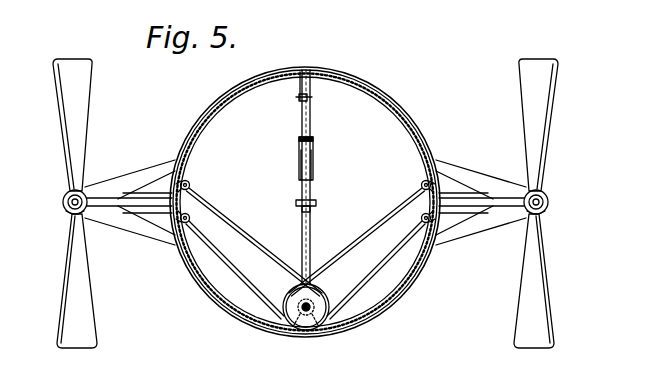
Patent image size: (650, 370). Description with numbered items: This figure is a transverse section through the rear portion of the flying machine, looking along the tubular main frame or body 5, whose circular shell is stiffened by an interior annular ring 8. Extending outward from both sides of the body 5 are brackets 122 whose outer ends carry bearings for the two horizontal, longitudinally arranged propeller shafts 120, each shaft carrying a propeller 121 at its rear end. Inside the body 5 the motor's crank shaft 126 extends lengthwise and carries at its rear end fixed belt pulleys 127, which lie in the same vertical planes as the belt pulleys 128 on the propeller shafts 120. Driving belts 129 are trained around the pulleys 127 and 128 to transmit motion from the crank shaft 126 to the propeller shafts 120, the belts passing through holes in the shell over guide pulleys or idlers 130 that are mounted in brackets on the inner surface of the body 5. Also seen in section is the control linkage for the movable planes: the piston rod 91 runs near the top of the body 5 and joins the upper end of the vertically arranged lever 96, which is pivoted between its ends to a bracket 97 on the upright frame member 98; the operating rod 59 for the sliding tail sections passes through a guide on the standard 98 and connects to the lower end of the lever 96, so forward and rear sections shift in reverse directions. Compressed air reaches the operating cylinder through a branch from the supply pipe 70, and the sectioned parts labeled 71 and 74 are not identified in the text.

The main frame or body 5 is at (378, 99).
The annular stiffening rib 8 is at (236, 97).
The operating rod 59 is at (315, 203).
The supply pipe 70 is at (315, 363).
The part (cut off) 71 is at (285, 363).
The part (cut off) 74 is at (222, 363).
The piston rod 91 is at (312, 98).
The vertically arranged lever 96 is at (311, 122).
The bracket 97 is at (300, 143).
The upright frame member 98 is at (299, 88).
The propeller shaft 120 is at (68, 203).
The propeller 121 is at (70, 172).
The bracket 122 is at (86, 216).
The crank shaft 126 is at (311, 304).
The belt pulley 127 is at (296, 298).
The belt pulley 128 is at (70, 211).
The driving belt 129 is at (289, 262).
The guide pulley or idler 130 is at (229, 207).